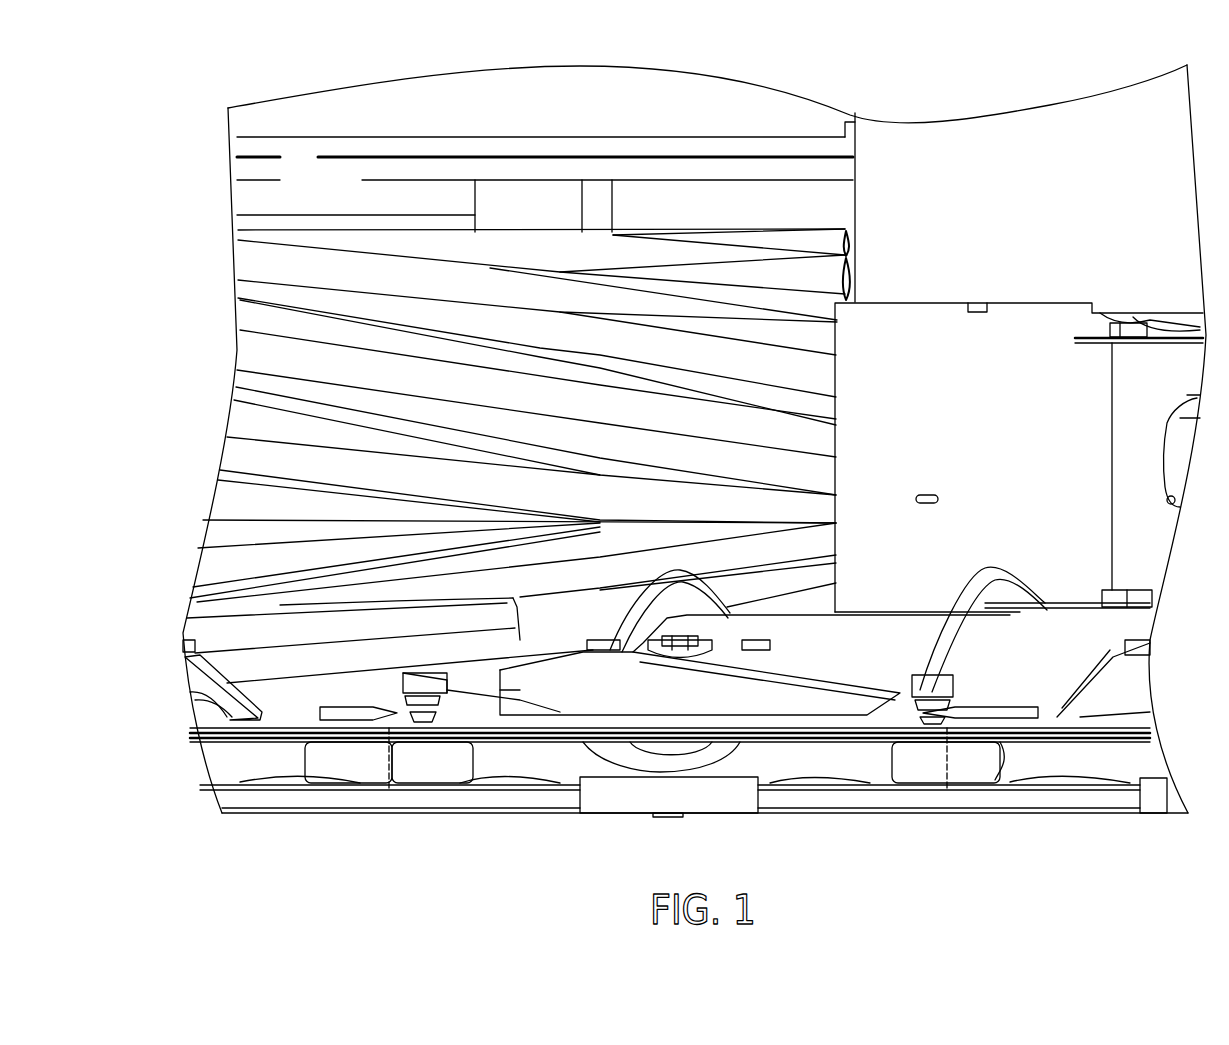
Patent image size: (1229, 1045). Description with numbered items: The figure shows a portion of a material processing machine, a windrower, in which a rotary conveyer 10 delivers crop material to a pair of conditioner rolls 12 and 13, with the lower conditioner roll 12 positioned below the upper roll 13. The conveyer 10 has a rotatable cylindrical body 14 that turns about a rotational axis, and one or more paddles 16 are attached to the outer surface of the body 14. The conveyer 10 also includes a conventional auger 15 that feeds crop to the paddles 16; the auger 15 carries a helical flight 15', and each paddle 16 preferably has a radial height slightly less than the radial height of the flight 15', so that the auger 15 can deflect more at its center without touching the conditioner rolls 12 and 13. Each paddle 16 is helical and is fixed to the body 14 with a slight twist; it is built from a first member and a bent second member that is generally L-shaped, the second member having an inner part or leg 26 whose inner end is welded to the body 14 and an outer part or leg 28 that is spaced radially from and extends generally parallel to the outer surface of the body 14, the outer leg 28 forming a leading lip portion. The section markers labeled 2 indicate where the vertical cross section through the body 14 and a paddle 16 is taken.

The vertical cross section 2- 2 is at (345, 178).
The rotary conveyer 10 is at (292, 697).
The conditioner roll 12 is at (852, 560).
The conditioner roll 13 is at (882, 246).
The rotatable cylindrical body 14 is at (903, 655).
The auger 15 is at (982, 589).
The flight 15' is at (989, 600).
The paddle 16 is at (530, 647).
The inner part or leg 26 is at (390, 670).
The outer part or leg 28 is at (340, 639).